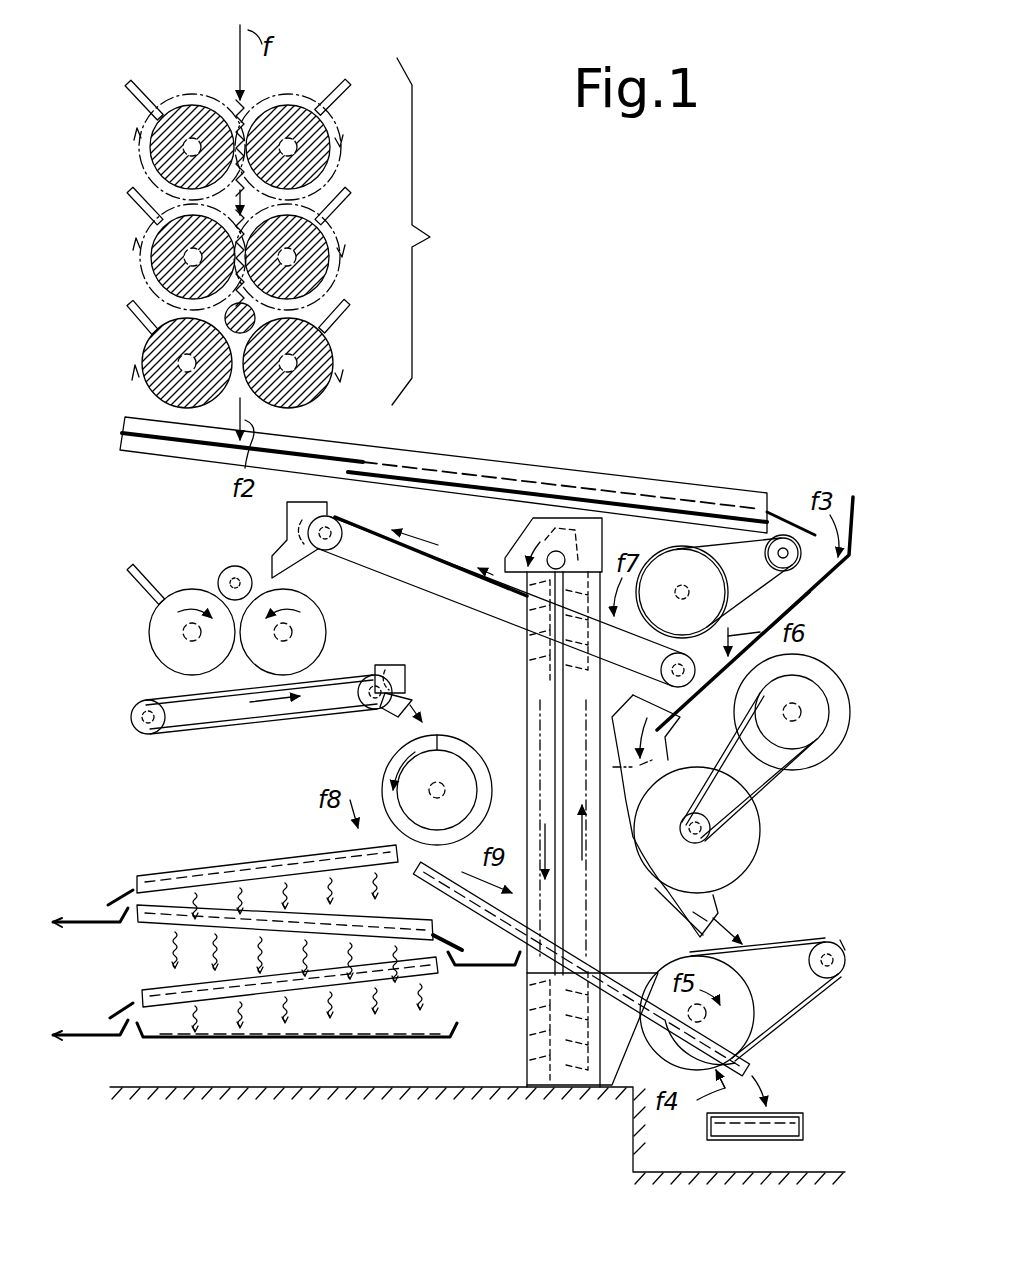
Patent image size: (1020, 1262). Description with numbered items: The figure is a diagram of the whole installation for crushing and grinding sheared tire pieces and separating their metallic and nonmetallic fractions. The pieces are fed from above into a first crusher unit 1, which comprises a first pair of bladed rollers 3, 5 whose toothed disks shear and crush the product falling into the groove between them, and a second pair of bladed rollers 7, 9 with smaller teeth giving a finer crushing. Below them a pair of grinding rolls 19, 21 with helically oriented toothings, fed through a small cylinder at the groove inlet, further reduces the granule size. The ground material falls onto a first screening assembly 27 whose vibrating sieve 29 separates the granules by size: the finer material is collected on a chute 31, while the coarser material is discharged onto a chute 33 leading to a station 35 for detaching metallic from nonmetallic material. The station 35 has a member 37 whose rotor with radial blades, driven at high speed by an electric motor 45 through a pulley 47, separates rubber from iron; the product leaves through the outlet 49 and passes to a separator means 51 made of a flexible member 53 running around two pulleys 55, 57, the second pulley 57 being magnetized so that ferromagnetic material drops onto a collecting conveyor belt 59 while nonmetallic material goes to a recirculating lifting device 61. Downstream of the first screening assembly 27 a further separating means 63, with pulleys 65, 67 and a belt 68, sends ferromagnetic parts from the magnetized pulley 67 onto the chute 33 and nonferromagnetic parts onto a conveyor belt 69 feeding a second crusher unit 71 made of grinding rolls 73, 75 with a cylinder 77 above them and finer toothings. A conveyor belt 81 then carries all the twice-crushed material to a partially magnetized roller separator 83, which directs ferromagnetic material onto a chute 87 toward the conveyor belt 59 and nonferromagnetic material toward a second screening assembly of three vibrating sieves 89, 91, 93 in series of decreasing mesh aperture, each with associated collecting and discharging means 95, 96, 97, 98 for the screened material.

The first crusher unit 1 is at (422, 231).
The bladed roller 3 is at (162, 175).
The bladed roller 5 is at (333, 118).
The bladed roller 7 is at (162, 285).
The bladed roller 9 is at (333, 226).
The grinding roll 19 is at (156, 382).
The grinding roll 21 is at (335, 348).
The first screening assembly 27 is at (625, 478).
The sieve 29 is at (508, 467).
The chute 31 is at (525, 496).
The chute 33 is at (848, 560).
The station for separating metallic material from nonmetallic material 35 is at (765, 835).
The member comprising a rotor having radial blades 37 is at (752, 858).
The electric motor 45 is at (828, 688).
The pulley 47 is at (775, 773).
The outlet 49 is at (693, 915).
The separator means 51 is at (847, 940).
The flexible member 53 is at (790, 1018).
The pulley 55 is at (823, 942).
The second pulley 57 is at (740, 1000).
The conveyor belt 59 is at (787, 1112).
The recirculating means 61 is at (527, 655).
The further separating means 63 is at (730, 555).
The pulley 65 is at (792, 537).
The pulley 67 is at (680, 557).
The belt 68 is at (803, 593).
The conveyor belt 69 is at (440, 588).
The second crusher unit 71 is at (146, 620).
The grinding roll 73 is at (178, 588).
The grinding roll 75 is at (314, 624).
The cylinder 77 is at (228, 572).
The conveyor belt 81 is at (175, 732).
The separator means 83 is at (455, 735).
The chute 87 is at (463, 906).
The vibrating sieve 89 is at (170, 880).
The vibrating sieve 91 is at (397, 922).
The vibrating sieve 93 is at (159, 995).
The collecting and discharging means 95 is at (84, 920).
The collecting and discharging means 96 is at (480, 965).
The collecting and discharging means 97 is at (84, 1032).
The collecting and discharging means 98 is at (390, 1039).